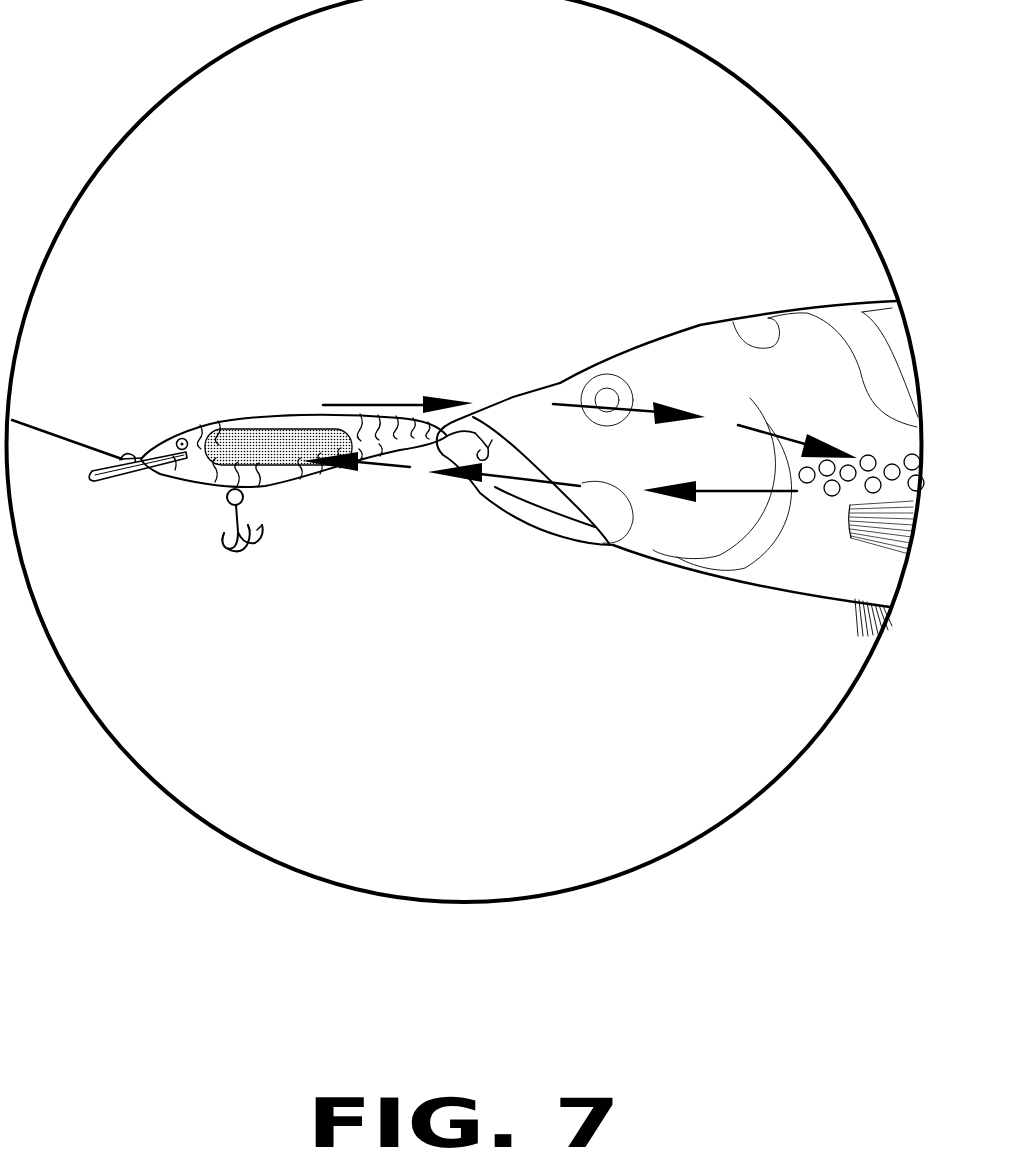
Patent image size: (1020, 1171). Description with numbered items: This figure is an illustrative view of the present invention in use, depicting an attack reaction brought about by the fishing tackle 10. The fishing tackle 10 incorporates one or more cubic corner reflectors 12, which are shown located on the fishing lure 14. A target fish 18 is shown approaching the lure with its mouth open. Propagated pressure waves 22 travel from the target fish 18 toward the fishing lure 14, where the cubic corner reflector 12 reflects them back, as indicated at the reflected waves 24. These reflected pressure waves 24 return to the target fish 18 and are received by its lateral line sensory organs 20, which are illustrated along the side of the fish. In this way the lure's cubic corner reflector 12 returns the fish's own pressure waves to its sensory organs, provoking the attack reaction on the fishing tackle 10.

The fishing tackle 10 is at (360, 150).
The cubic corner reflector 12 is at (251, 443).
The fishing lure 14 is at (295, 482).
The target fish 18 is at (729, 325).
The lateral line sensory organs 20 is at (832, 488).
The propagated pressure waves 22 is at (498, 487).
The reflected pressure waves 24 is at (390, 405).